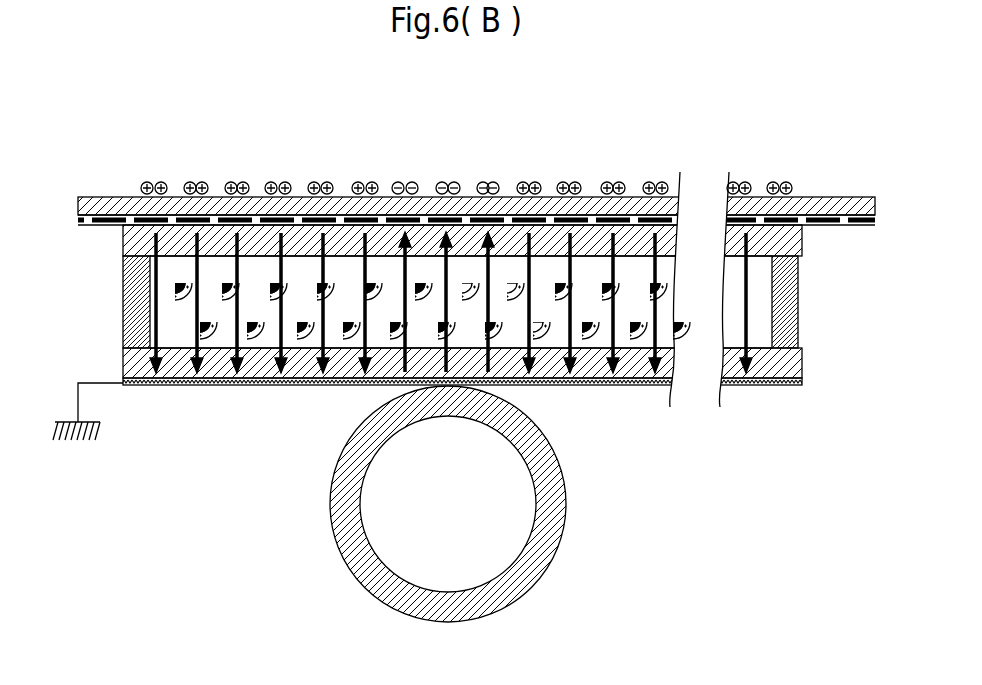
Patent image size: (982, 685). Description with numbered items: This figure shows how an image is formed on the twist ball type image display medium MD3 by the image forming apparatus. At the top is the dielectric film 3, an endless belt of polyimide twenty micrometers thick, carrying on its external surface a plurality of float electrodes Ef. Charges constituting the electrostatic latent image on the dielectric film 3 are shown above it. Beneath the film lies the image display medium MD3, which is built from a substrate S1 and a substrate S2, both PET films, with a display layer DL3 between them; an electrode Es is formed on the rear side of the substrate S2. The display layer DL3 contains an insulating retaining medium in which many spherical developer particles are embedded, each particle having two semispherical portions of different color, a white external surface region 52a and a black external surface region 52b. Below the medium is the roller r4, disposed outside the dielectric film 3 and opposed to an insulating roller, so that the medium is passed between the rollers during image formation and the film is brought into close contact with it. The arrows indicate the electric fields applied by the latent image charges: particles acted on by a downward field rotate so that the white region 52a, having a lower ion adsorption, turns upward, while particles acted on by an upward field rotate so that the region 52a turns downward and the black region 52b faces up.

The dielectric film 3 is at (95, 208).
The float electrodes Ef is at (166, 218).
The external surface region 52a is at (588, 278).
The external surface region 52b is at (466, 278).
The substrate S1 is at (790, 241).
The substrate S2 is at (792, 366).
The display layer DL3 is at (806, 290).
The electrode Es is at (803, 385).
The image display medium MD3 is at (185, 412).
The roller r4 is at (556, 483).